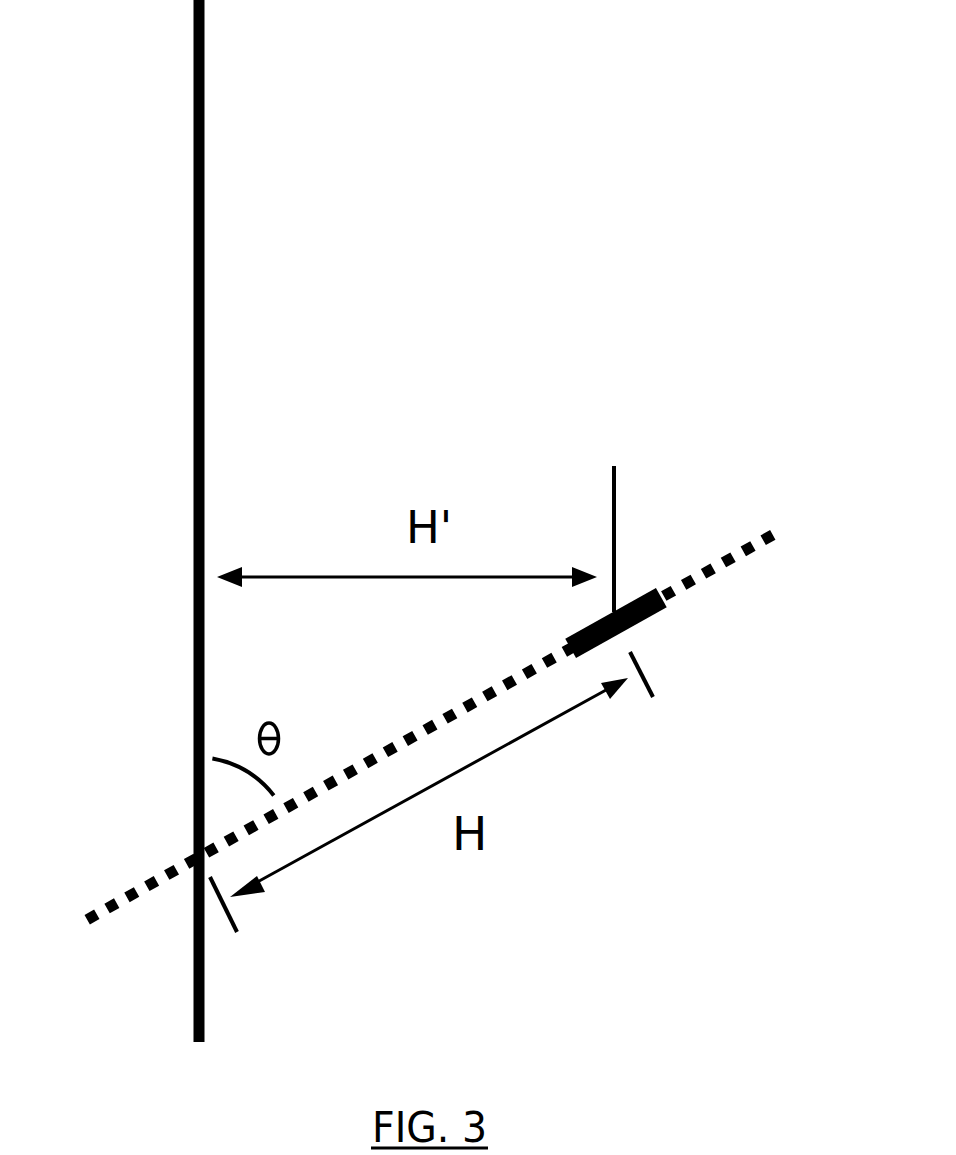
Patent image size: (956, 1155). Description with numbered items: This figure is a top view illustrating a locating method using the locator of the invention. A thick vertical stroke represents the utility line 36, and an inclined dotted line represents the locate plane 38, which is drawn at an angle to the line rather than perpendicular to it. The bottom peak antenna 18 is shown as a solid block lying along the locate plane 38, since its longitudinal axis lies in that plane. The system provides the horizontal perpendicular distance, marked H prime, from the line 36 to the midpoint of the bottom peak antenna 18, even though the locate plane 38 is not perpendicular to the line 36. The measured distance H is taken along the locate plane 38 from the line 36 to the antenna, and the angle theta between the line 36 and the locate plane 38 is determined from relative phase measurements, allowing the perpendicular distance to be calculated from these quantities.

The line 36 is at (205, 297).
The locate plane 38 is at (748, 547).
The bottom peak antenna 18 is at (632, 630).